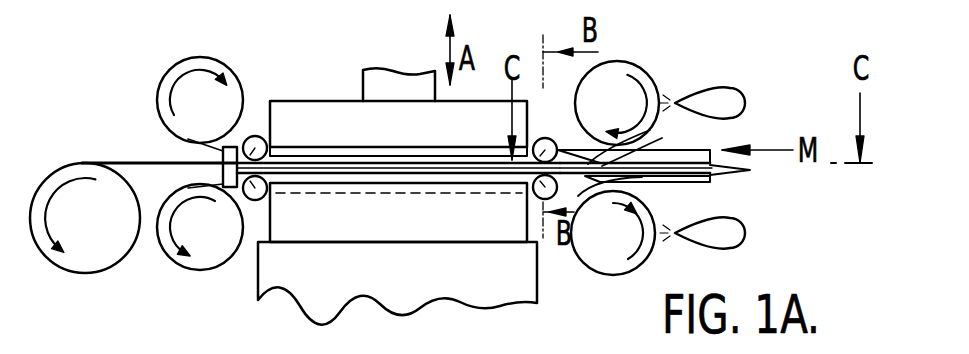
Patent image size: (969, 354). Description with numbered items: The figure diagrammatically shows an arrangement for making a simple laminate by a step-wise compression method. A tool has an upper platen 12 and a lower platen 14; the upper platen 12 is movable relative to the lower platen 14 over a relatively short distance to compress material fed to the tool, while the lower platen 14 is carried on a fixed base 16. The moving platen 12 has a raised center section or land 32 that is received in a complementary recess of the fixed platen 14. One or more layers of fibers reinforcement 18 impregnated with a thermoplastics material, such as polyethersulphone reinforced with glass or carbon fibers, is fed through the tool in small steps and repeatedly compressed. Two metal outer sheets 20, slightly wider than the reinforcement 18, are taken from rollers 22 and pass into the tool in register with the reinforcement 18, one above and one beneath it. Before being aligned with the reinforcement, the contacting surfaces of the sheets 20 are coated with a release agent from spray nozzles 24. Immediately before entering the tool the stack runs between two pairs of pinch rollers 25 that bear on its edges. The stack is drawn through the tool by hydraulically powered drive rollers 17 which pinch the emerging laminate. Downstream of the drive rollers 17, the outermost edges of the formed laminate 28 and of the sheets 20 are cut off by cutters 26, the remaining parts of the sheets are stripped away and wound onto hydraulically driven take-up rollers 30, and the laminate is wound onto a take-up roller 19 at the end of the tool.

The upper platen 12 is at (350, 141).
The lower platen 14 is at (340, 234).
The fixed base 16 is at (412, 295).
The drive rollers 17 is at (257, 147).
The fibers reinforcement 18 is at (716, 172).
The take-up roller 19 is at (112, 238).
The metal outer sheets 20 is at (646, 156).
The rollers 22 is at (625, 116).
The spray nozzles 24 is at (742, 106).
The pinch rollers 25 is at (558, 152).
The cutters 26 is at (238, 148).
The laminate 28 is at (146, 164).
The take-up rollers 30 is at (188, 130).
The land 32 is at (435, 150).